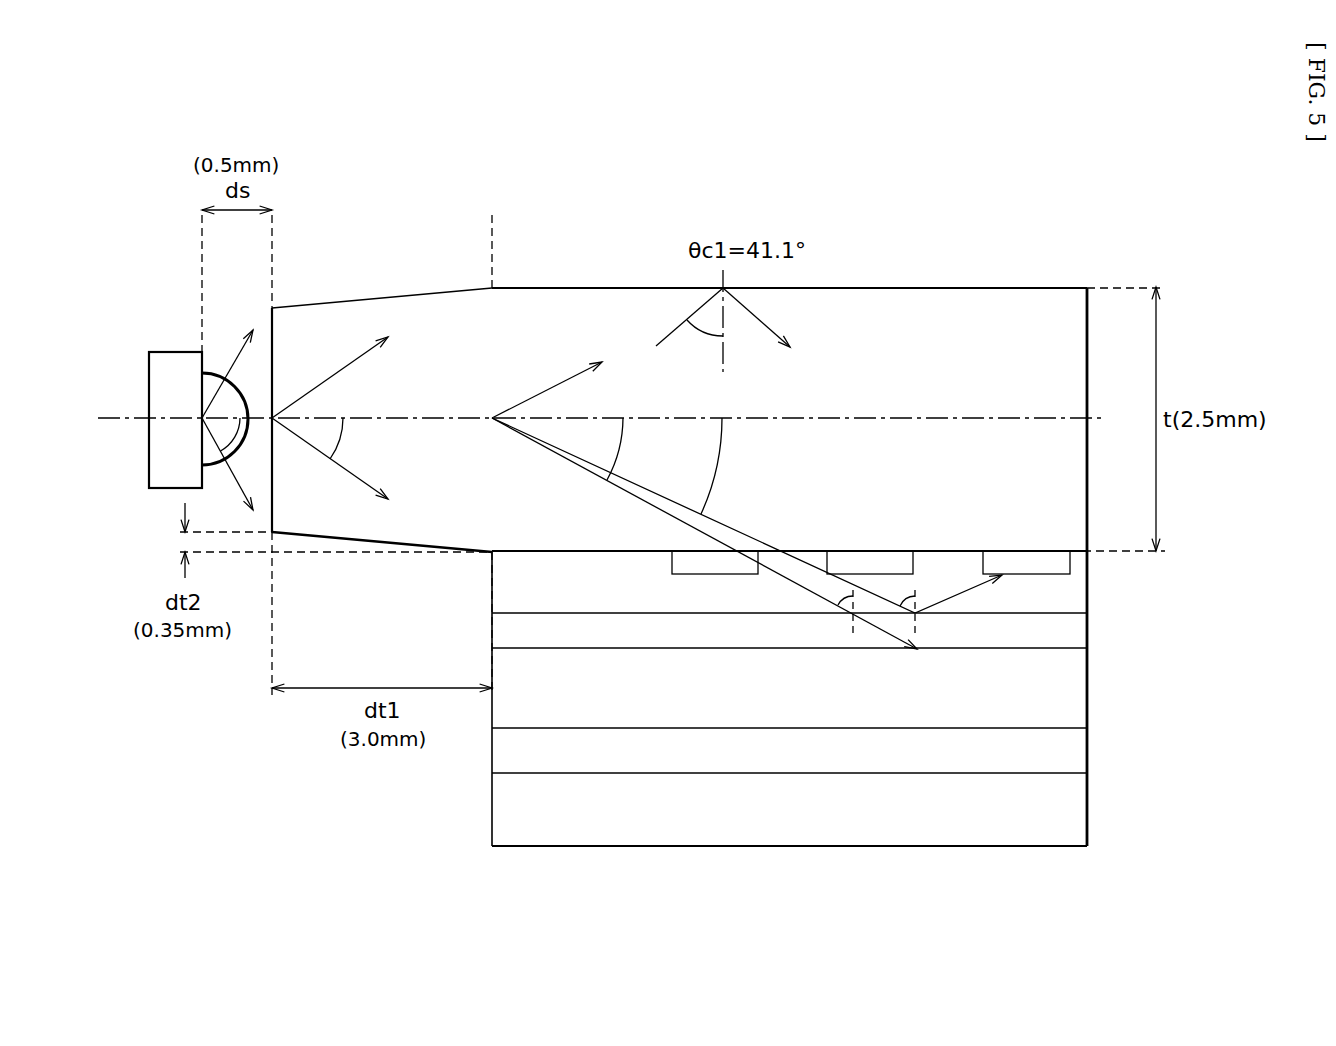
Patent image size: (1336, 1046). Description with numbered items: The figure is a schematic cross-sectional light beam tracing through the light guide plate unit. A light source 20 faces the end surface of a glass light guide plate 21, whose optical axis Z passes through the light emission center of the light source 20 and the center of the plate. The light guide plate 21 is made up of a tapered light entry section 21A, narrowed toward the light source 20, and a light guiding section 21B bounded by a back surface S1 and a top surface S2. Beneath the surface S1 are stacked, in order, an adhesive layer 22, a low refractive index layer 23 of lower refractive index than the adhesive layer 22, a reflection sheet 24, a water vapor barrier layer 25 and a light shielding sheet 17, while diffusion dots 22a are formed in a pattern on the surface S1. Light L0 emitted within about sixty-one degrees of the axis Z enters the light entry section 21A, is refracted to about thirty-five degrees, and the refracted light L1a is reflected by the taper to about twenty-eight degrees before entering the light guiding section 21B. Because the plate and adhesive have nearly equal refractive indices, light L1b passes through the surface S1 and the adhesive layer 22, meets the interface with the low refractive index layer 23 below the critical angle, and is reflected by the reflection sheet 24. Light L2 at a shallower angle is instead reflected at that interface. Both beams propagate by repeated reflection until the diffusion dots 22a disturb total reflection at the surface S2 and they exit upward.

The light source 20 is at (155, 327).
The light guide plate 21 is at (711, 513).
The light entry section 21A is at (492, 221).
The light guiding section 21B is at (802, 366).
The adhesive layer 22 is at (825, 582).
The diffusion dots 22a is at (1055, 562).
The low refractive index layer 23 is at (1073, 640).
The reflection sheet 24 is at (1078, 687).
The water vapor barrier layer 25 is at (1078, 749).
The light shielding sheet 17 is at (1078, 807).
The surface S1 is at (960, 552).
The surface S2 is at (960, 286).
The axis Z is at (105, 408).
The light L0 is at (235, 485).
The refracted light L1a is at (342, 470).
The light L1b is at (640, 500).
The light L2 is at (740, 528).